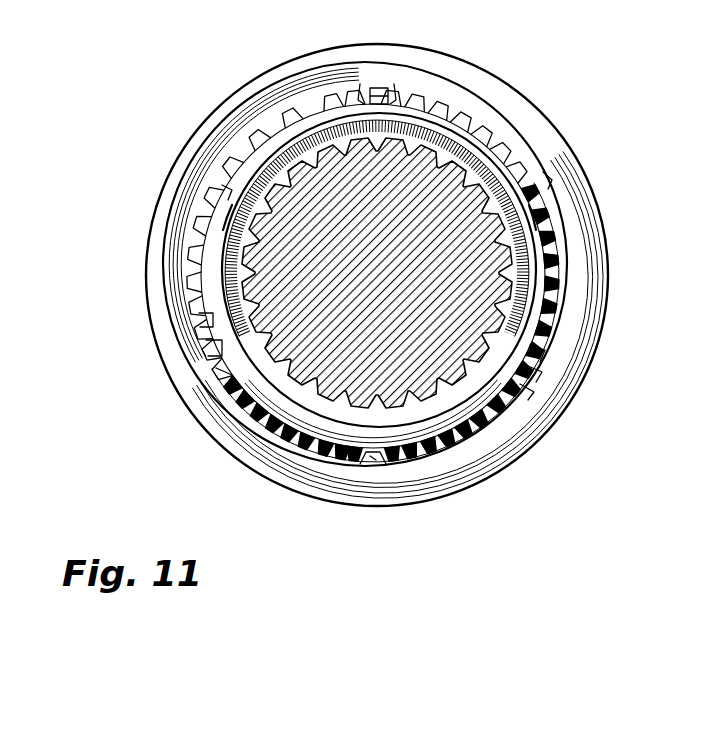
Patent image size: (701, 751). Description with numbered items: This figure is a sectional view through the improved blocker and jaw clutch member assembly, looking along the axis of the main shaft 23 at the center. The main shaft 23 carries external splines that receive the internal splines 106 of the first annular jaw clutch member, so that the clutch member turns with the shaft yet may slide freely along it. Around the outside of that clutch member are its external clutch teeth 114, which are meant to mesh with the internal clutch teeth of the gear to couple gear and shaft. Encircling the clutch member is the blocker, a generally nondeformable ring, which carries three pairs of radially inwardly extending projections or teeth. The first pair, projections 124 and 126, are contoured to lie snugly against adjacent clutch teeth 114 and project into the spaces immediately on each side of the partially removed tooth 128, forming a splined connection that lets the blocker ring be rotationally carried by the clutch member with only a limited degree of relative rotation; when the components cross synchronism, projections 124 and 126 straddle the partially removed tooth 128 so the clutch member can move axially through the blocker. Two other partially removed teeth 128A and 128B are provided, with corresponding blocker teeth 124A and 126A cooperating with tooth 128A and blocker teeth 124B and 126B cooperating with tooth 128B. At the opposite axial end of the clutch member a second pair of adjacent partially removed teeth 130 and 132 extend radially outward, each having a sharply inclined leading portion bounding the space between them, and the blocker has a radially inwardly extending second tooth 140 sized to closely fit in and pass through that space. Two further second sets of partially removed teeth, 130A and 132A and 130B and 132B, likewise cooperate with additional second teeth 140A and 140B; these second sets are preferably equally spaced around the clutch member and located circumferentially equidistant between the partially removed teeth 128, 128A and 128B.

The main shaft 23 is at (377, 273).
The internal splines 106 is at (296, 156).
The external clutch teeth 114 is at (300, 114).
The radially inwardly extending projection 124 is at (360, 90).
The internally extending tooth 124A is at (222, 380).
The internally extending tooth 124B is at (540, 354).
The radially inwardly extending projection 126 is at (394, 90).
The internally extending tooth 126A is at (207, 352).
The internally extending tooth 126B is at (526, 389).
The partially removed tooth 128 is at (378, 88).
The partially removed tooth 128A is at (211, 370).
The partially removed tooth 128B is at (538, 372).
The partially removed tooth 130 is at (403, 466).
The partially removed tooth 130A is at (528, 150).
The partially removed tooth 130B is at (215, 212).
The partially removed tooth 132 is at (343, 464).
The partially removed tooth 132A is at (556, 205).
The partially removed tooth 132B is at (250, 168).
The second tooth 140 is at (376, 465).
The second tooth 140A is at (549, 179).
The second tooth 140B is at (228, 190).